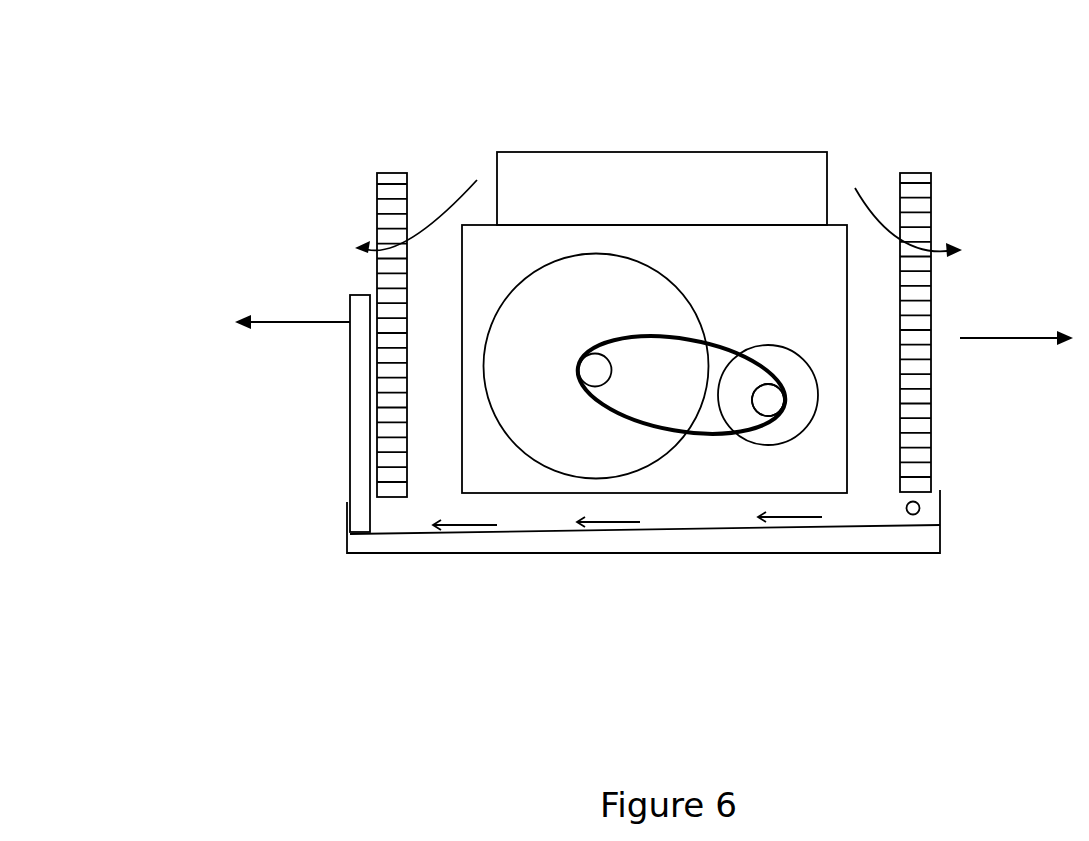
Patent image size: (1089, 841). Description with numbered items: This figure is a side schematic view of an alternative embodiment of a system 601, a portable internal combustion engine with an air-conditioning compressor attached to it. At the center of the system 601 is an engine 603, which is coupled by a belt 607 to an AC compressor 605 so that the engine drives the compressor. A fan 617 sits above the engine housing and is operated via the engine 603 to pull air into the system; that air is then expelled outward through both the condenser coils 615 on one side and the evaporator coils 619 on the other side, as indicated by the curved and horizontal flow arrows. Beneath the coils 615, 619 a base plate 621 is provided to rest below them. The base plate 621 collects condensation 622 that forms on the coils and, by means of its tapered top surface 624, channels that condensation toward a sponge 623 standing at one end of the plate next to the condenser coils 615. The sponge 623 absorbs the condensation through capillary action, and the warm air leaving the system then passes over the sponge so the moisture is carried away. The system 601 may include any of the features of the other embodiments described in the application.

The system 601 is at (192, 72).
The engine 603 is at (673, 283).
The AC compressor 605 is at (793, 440).
The belt 607 is at (727, 348).
The condenser coils 615 is at (377, 226).
The fan 617 is at (658, 152).
The evaporator coils 619 is at (928, 208).
The base plate 621 is at (767, 552).
The condensation 622 is at (920, 506).
The sponge 623 is at (350, 383).
The tapered top surface 624 is at (386, 514).